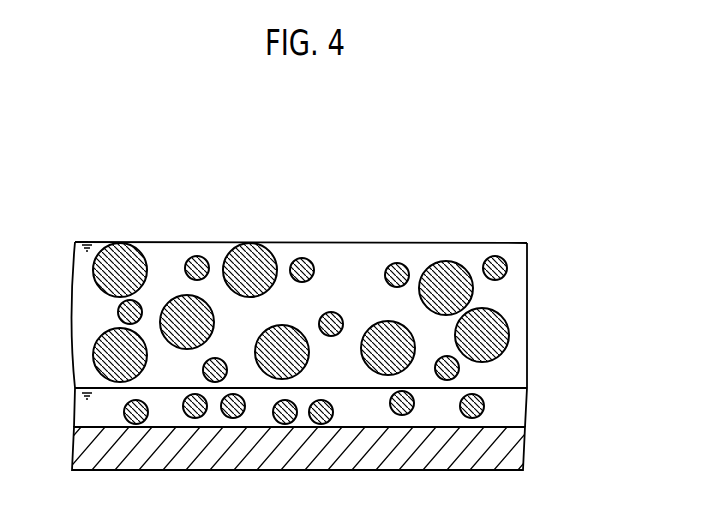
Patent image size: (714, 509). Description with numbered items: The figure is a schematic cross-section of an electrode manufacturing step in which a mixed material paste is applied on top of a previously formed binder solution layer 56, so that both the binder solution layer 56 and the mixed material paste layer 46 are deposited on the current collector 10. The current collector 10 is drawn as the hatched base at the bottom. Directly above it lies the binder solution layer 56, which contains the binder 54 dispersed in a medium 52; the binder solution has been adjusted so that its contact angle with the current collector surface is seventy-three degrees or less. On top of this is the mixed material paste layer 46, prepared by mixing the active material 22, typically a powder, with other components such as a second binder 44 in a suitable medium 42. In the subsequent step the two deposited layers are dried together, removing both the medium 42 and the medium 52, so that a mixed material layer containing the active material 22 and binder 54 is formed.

The current collector 10 is at (503, 451).
The active material 22 is at (251, 245).
The medium 42 is at (350, 255).
The second binder 44 is at (118, 310).
The mixed material paste layer 46 is at (532, 305).
The medium 52 is at (503, 398).
The binder 54 is at (124, 407).
The binder solution layer 56 is at (532, 412).